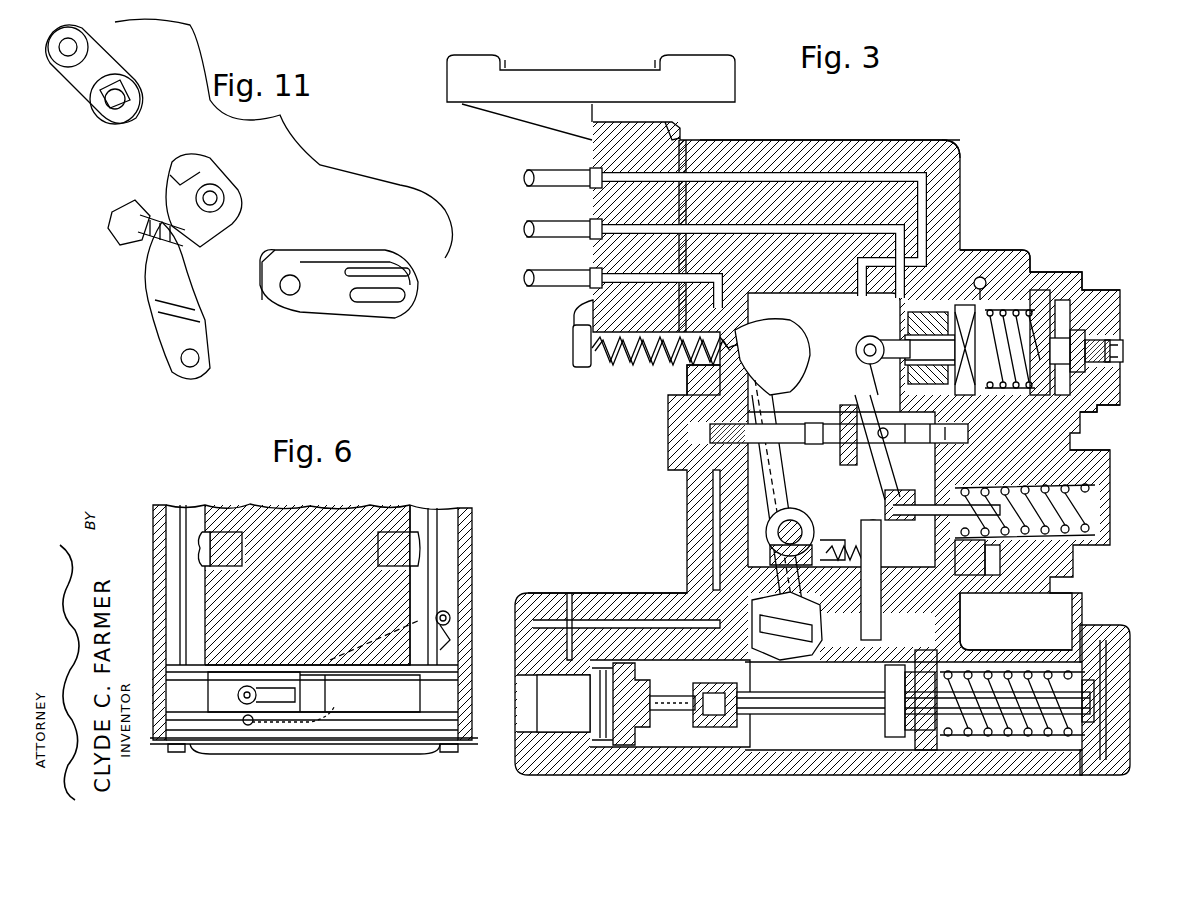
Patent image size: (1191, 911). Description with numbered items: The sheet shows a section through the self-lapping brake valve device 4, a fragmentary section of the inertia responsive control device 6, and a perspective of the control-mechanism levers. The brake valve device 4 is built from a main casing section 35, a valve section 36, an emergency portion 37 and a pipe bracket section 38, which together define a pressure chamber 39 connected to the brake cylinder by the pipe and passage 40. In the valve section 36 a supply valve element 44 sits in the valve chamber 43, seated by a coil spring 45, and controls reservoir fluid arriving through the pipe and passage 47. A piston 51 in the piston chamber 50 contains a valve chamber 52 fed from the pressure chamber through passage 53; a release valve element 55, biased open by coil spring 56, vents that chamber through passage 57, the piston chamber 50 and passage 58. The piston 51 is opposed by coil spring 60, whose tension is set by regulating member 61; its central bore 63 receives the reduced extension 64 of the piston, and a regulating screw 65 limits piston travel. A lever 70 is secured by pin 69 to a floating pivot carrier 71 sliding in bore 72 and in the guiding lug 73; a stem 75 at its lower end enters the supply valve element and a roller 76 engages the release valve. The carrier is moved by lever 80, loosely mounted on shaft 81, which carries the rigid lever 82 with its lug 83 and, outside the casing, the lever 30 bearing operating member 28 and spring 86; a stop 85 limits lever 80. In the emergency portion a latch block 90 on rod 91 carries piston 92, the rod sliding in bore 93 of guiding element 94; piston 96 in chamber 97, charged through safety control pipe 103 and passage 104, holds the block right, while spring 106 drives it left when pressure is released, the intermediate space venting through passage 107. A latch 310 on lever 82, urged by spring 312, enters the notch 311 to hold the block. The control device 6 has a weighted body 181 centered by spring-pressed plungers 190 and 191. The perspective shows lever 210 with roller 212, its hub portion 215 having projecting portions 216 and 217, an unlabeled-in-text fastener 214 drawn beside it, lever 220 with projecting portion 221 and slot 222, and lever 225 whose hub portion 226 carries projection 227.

In FIG. 3, the brake valve device 4 is at (866, 138).
In FIG. 3, the operating member 28 is at (770, 625).
In FIG. 3, the lever 30 is at (796, 636).
In FIG. 3, the main casing section 35 is at (820, 140).
In FIG. 3, the valve section 36 is at (1010, 250).
In FIG. 3, the emergency portion 37 is at (962, 612).
In FIG. 3, the pipe bracket section 38 is at (674, 138).
In FIG. 3, the pressure chamber 39 is at (760, 485).
In FIG. 3, the pipe and passage 40 is at (568, 230).
In FIG. 3, the valve chamber 43 is at (995, 560).
In FIG. 3, the supply valve element 44 is at (1050, 447).
In FIG. 3, the coil spring 45 is at (1070, 515).
In FIG. 3, the pipe and passage 47 is at (570, 178).
In FIG. 3, the piston chamber 50 is at (968, 310).
In FIG. 3, the piston 51 is at (1010, 315).
In FIG. 3, the valve chamber 52 is at (920, 342).
In FIG. 3, the passage 53 is at (870, 368).
In FIG. 3, the release valve element 55 is at (880, 346).
In FIG. 3, the coil spring 56 is at (912, 325).
In FIG. 3, the passage 57 is at (1040, 320).
In FIG. 3, the passage 58 is at (980, 277).
In FIG. 3, the coil spring 60 is at (1100, 362).
In FIG. 3, the regulating member 61 is at (1062, 340).
In FIG. 3, the central bore 63 is at (1080, 336).
In FIG. 3, the reduced extension 64 is at (1068, 350).
In FIG. 3, the regulating screw 65 is at (1122, 348).
In FIG. 3, the pin 69 is at (880, 428).
In FIG. 3, the lever 70 is at (880, 470).
In FIG. 3, the floating pivot carrier 71 is at (792, 360).
In FIG. 3, the bore 72 is at (940, 460).
In FIG. 3, the guiding lug 73 is at (840, 455).
In FIG. 3, the stem 75 is at (1000, 568).
In FIG. 3, the roller 76 is at (856, 350).
In FIG. 3, the lever 80 is at (790, 510).
In FIG. 3, the shaft 81 is at (797, 520).
In FIG. 3, the lever 82 is at (840, 535).
In FIG. 3, the lug 83 is at (880, 530).
In FIG. 3, the stop 85 is at (800, 428).
In FIG. 3, the spring 86 is at (652, 362).
In FIG. 3, the latch block 90 is at (850, 725).
In FIG. 3, the rod 91 is at (892, 705).
In FIG. 3, the piston 92 is at (728, 730).
In FIG. 3, the bore 93 is at (1095, 700).
In FIG. 3, the guiding element 94 is at (1112, 648).
In FIG. 3, the piston 96 is at (640, 745).
In FIG. 3, the chamber 97 is at (600, 735).
In FIG. 3, the safety control pipe 103 is at (568, 280).
In FIG. 3, the passage 104 is at (600, 610).
In FIG. 3, the spring 106 is at (1072, 730).
In FIG. 3, the atmospheric vent passage 107 is at (664, 745).
In FIG. 3, the latch 310 is at (878, 630).
In FIG. 3, the notch 311 is at (900, 668).
In FIG. 3, the spring 312 is at (868, 553).
In FIG. 6, the inertia responsive control device 6 is at (490, 584).
In FIG. 6, the weighted body 181 is at (400, 600).
In FIG. 6, the spring-pressed plunger 190 is at (420, 548).
In FIG. 6, the spring-pressed plunger 191 is at (200, 548).
In FIG. 11, the lever 210 is at (160, 302).
In FIG. 11, the roller 212 is at (145, 370).
In FIG. 11, the bolt 214 is at (125, 235).
In FIG. 11, the hub portion 215 is at (212, 165).
In FIG. 11, the projecting portion 216 is at (170, 180).
In FIG. 11, the projecting portion 217 is at (222, 205).
In FIG. 11, the lever 220 is at (310, 262).
In FIG. 11, the projecting portion 221 is at (262, 275).
In FIG. 11, the slot 222 is at (378, 292).
In FIG. 11, the lever 225 is at (90, 75).
In FIG. 11, the hub portion 226 is at (114, 84).
In FIG. 11, the projection 227 is at (120, 88).